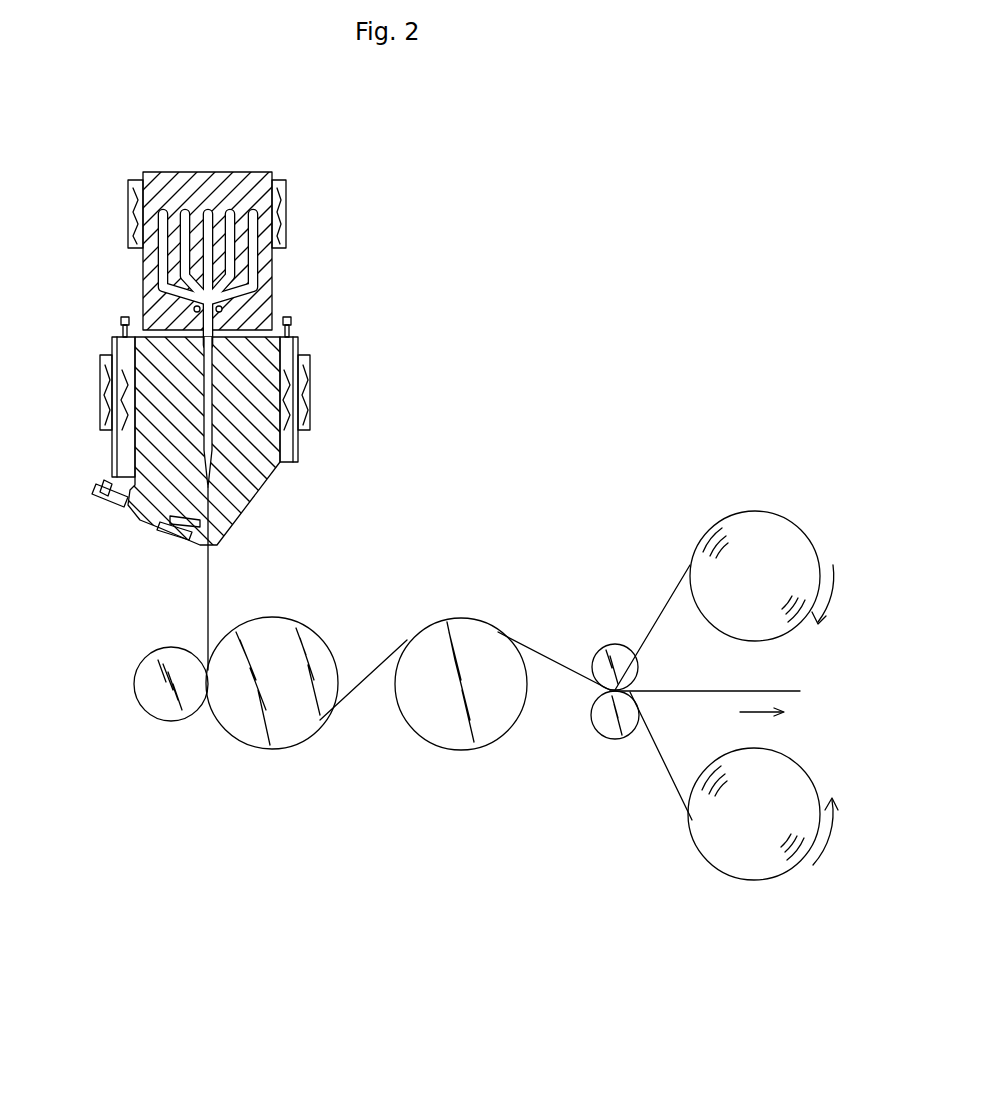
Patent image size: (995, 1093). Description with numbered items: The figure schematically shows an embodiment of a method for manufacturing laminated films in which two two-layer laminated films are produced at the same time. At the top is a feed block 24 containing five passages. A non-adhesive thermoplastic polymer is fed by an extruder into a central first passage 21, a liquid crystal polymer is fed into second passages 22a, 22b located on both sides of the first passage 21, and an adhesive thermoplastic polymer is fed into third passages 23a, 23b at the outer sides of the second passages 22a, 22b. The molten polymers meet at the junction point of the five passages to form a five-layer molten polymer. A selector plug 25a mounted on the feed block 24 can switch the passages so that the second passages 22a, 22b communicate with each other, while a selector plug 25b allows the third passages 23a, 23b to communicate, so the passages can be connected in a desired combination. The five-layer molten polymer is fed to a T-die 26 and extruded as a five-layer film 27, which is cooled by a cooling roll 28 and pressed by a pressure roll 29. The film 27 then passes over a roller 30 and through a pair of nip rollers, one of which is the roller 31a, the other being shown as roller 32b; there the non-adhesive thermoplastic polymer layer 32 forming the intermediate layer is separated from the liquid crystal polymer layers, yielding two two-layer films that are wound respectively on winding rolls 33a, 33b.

The first passage 21 is at (215, 222).
The second passage 22a is at (187, 237).
The second passage 22b is at (233, 226).
The third passage 23a is at (165, 272).
The third passage 23b is at (262, 268).
The feed block 24 is at (270, 302).
The selector plug 25a is at (131, 192).
The selector plug 25b is at (282, 190).
The T-die 26 is at (248, 478).
The five-layer film 27 is at (210, 577).
The cooling roll 28 is at (303, 640).
The pressure roll 29 is at (150, 665).
The roller 30 is at (460, 728).
The roller 31a is at (613, 643).
The nip roller 32b is at (612, 728).
The non-adhesive thermoplastic polymer layer 32 is at (757, 690).
The winding roll 33a is at (748, 522).
The winding roll 33b is at (752, 858).